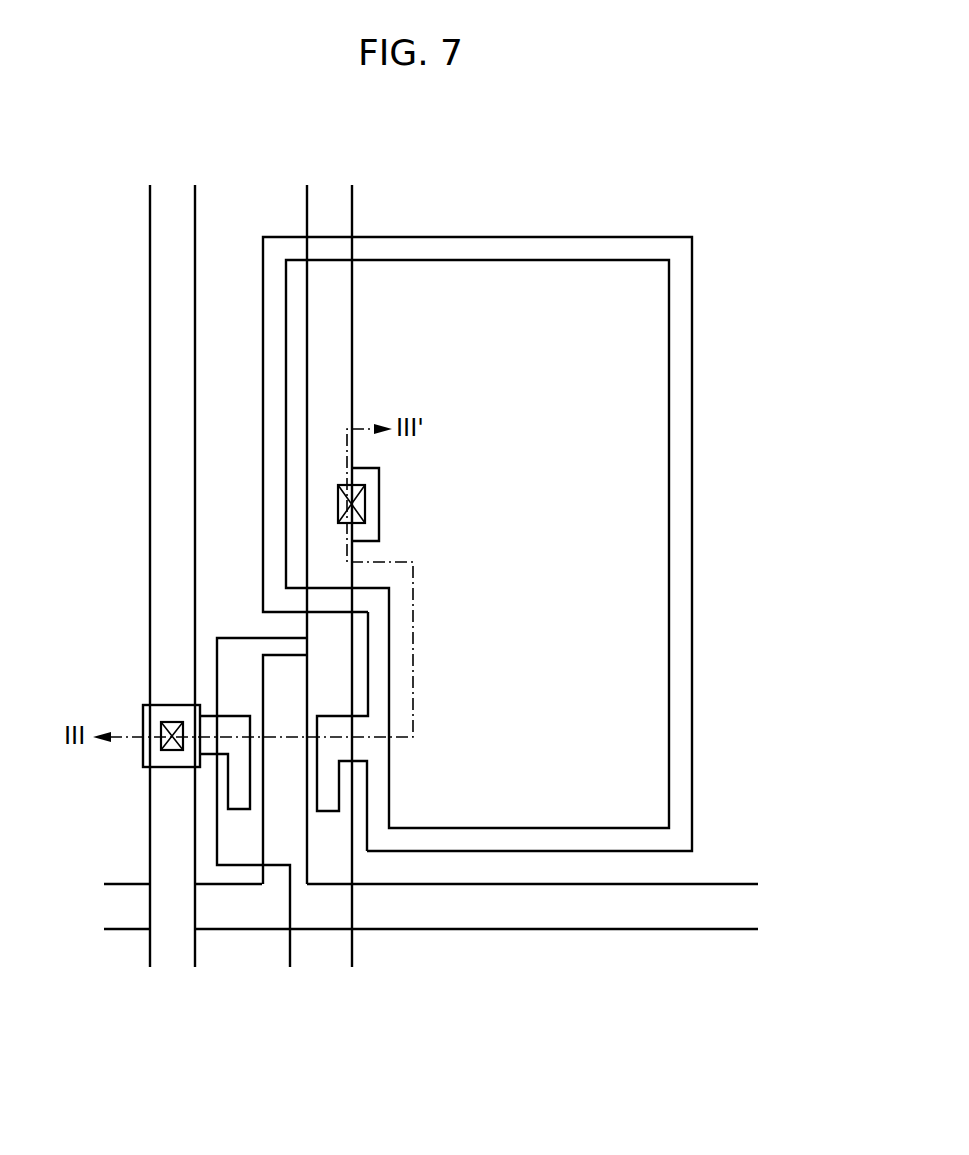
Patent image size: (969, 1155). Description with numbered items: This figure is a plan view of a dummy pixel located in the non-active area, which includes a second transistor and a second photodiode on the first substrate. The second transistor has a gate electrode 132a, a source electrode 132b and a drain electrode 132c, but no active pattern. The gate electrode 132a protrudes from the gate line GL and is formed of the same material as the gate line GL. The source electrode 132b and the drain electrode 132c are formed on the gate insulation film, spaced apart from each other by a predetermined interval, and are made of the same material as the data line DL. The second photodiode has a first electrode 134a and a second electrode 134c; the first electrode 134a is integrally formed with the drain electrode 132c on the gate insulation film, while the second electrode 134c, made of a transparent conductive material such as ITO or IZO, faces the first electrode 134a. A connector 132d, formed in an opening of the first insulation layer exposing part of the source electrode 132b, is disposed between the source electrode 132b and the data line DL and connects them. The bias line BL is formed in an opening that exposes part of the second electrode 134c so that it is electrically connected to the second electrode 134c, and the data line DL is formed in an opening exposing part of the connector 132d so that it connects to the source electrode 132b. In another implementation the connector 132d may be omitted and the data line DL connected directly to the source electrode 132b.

The data line DL is at (172, 560).
The bias line BL is at (343, 560).
The gate line GL is at (448, 906).
The gate electrode 132a is at (285, 667).
The source electrode 132b is at (240, 793).
The drain electrode 132c is at (328, 795).
The connector 132d is at (143, 753).
The first electrode 134a is at (512, 840).
The second electrode 134c is at (631, 807).